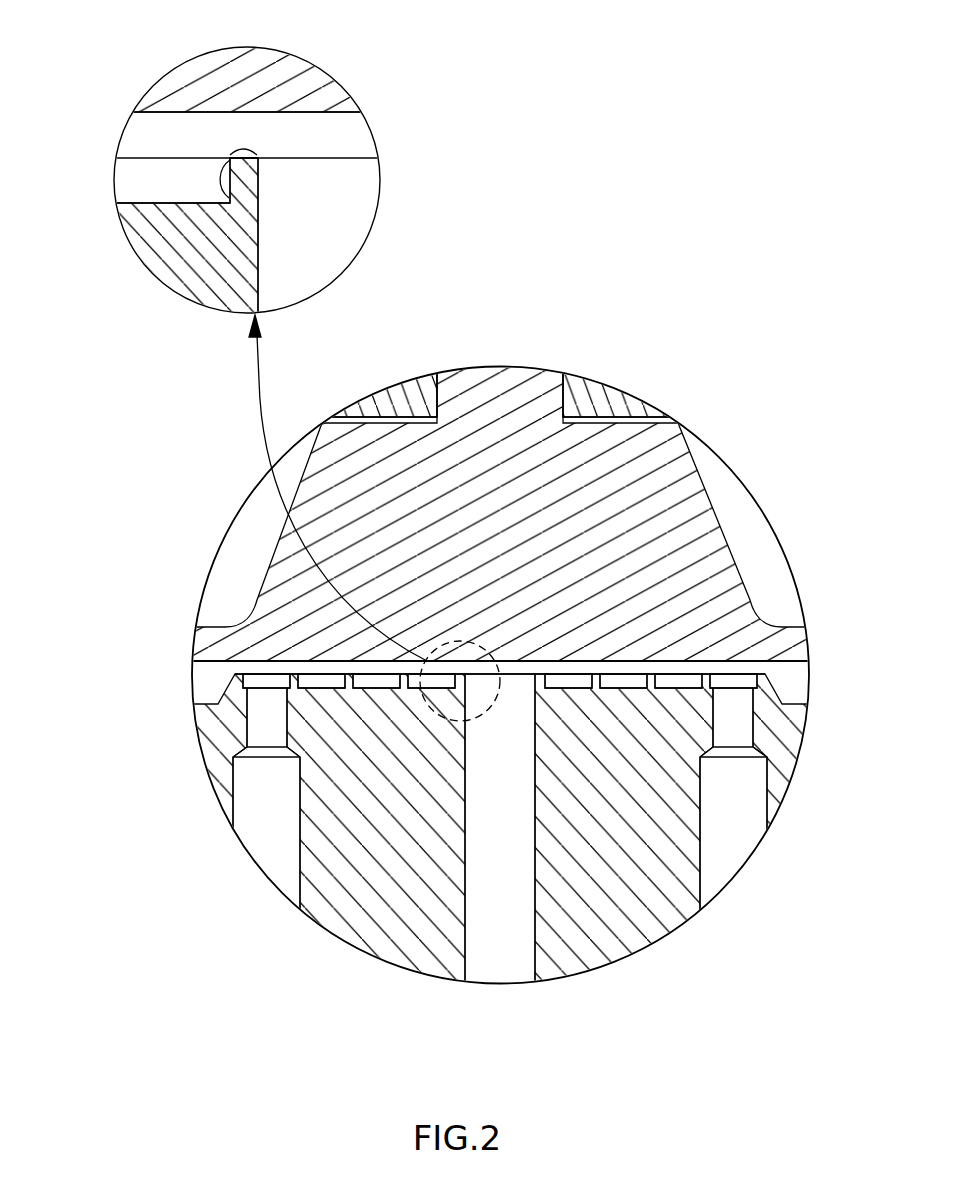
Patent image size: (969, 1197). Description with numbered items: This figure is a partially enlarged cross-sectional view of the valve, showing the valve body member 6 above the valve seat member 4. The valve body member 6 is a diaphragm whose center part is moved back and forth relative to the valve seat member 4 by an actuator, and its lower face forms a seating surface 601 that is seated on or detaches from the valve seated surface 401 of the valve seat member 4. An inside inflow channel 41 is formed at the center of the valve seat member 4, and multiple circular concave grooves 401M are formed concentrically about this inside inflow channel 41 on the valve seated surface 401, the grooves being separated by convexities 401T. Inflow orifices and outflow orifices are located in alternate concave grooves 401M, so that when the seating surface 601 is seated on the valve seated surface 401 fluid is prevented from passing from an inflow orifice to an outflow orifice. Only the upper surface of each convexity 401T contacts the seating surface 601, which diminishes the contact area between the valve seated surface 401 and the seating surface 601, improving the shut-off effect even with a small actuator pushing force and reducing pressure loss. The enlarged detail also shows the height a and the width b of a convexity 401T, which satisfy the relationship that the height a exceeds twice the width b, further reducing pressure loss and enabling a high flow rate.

The valve seat member 4 is at (620, 940).
The inside inflow channel 41 is at (280, 822).
The valve seated surface 401 is at (297, 674).
The concave groove 401M is at (142, 178).
The convexity 401T is at (257, 174).
The valve body member 6 is at (735, 531).
The seating surface 601 is at (500, 664).
The height of the convexity a is at (220, 179).
The width of the convexity b is at (243, 142).